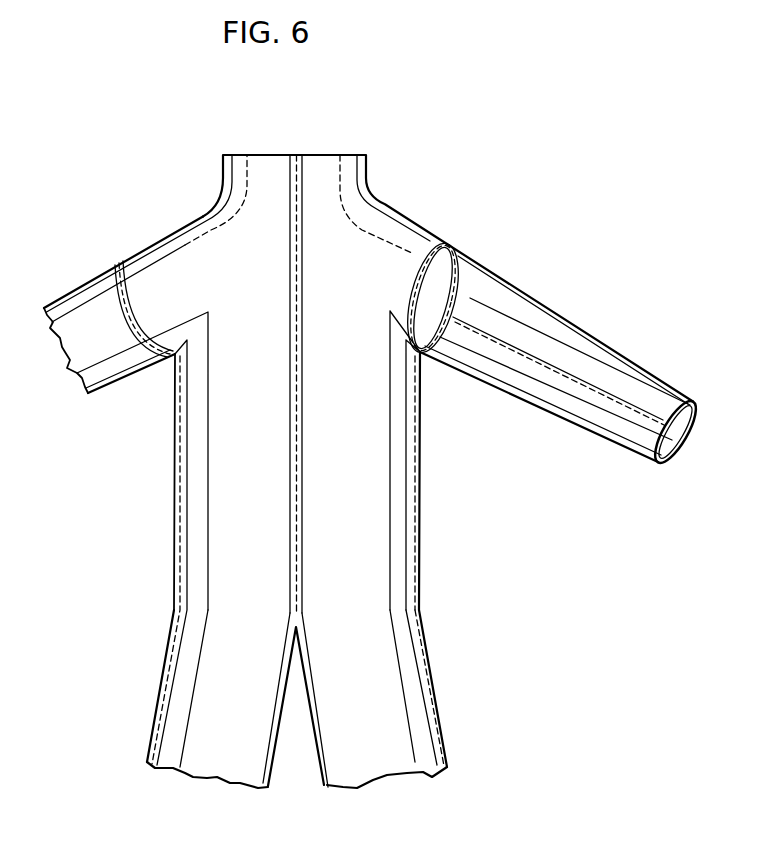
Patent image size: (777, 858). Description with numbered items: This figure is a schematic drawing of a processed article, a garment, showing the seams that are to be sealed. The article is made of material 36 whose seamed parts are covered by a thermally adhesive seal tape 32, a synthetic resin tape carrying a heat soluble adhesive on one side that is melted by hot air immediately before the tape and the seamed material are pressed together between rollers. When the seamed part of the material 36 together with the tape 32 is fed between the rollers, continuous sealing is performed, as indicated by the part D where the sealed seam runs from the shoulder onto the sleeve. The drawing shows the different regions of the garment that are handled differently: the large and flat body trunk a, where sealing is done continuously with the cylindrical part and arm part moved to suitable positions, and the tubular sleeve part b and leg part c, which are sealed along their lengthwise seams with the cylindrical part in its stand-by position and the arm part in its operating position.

The seal tape 32 is at (457, 273).
The material 36 is at (183, 487).
The part D is at (456, 235).
The body trunk a is at (407, 481).
The sleeve part b is at (577, 325).
The leg part c is at (438, 703).